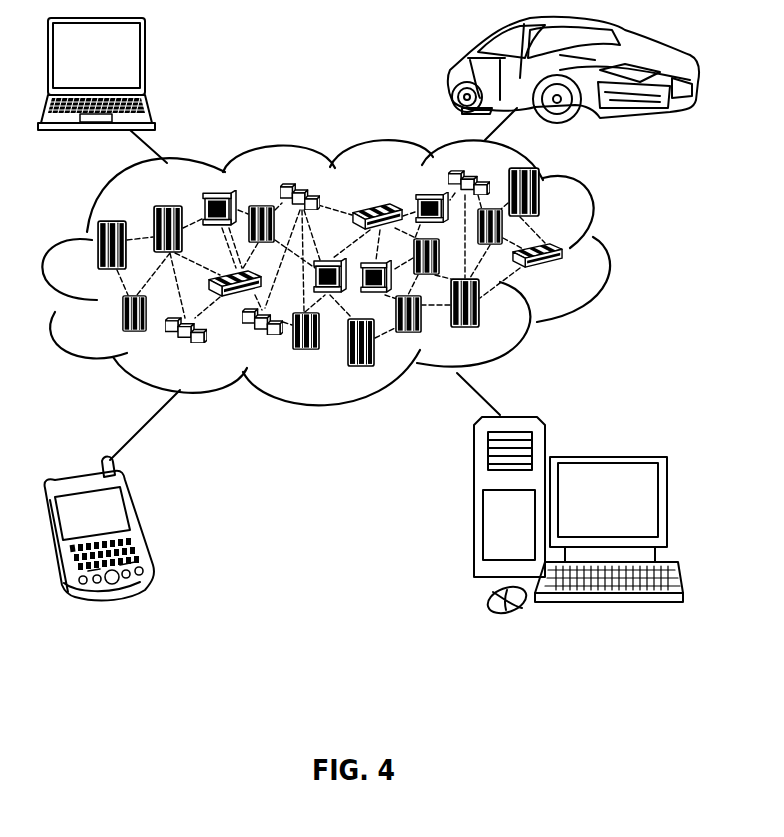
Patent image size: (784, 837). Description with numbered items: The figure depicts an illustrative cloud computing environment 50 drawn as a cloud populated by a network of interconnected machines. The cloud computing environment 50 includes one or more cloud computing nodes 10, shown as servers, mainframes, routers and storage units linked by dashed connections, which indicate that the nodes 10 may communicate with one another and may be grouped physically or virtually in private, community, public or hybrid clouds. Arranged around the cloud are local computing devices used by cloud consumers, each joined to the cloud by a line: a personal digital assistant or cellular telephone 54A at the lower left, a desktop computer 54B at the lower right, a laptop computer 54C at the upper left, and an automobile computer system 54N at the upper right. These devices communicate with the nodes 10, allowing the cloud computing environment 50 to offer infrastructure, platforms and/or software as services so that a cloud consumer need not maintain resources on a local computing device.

The cloud computing nodes 10 is at (583, 281).
The cloud computing environment 50 is at (605, 253).
The personal digital assistant or cellular telephone 54A is at (140, 521).
The desktop computer 54B is at (607, 457).
The laptop computer 54C is at (145, 60).
The automobile computer system 54N is at (450, 68).